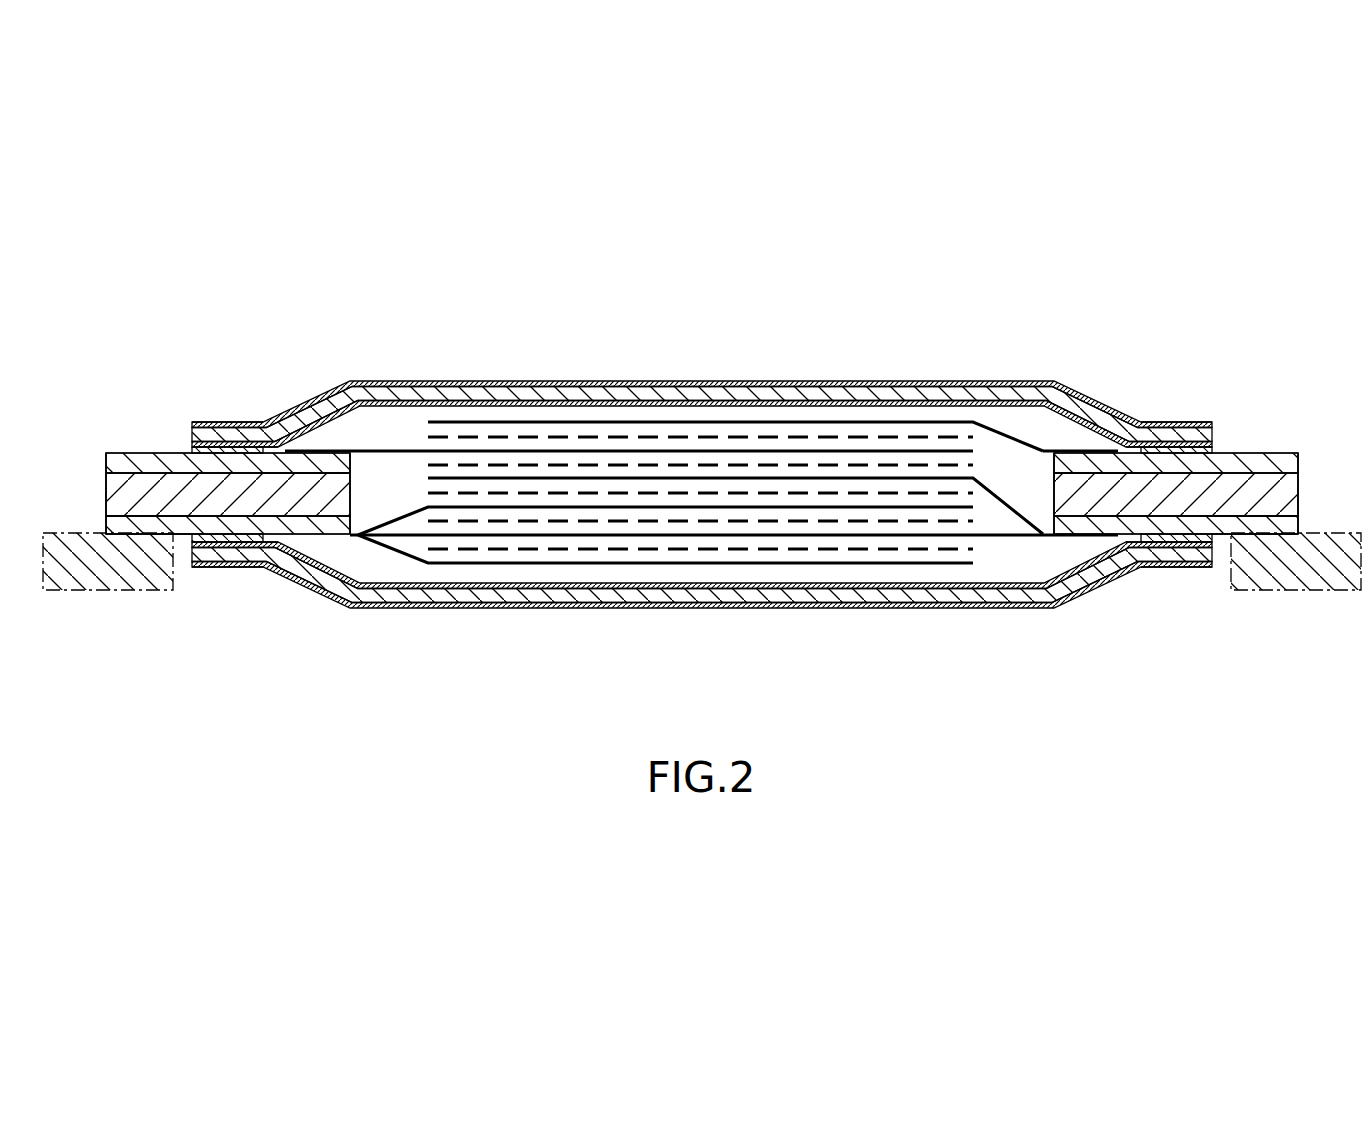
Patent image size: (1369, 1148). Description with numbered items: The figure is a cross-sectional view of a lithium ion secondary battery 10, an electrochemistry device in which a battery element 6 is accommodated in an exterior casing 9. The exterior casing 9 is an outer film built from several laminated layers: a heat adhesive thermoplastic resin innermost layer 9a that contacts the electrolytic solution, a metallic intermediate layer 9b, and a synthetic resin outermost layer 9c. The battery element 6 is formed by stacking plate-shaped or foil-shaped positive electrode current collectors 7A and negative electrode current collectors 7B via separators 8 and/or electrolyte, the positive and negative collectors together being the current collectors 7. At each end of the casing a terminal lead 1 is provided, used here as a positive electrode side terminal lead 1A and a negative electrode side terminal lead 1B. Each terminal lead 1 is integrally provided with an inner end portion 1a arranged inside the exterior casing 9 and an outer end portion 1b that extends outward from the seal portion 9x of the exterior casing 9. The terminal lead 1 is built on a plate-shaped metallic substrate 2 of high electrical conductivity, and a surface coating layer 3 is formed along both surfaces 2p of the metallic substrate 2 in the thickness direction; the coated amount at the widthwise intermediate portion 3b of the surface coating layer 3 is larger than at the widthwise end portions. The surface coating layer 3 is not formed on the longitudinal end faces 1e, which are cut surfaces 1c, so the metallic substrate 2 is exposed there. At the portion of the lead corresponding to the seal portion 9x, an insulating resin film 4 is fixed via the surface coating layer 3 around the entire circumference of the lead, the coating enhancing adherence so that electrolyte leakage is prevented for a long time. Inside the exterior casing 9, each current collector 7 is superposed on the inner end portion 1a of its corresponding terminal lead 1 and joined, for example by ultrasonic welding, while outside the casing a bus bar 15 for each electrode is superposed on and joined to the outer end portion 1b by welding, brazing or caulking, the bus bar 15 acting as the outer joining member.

The terminal lead 1 is at (130, 452).
The positive electrode side terminal lead 1A is at (1272, 452).
The negative electrode side terminal lead 1B is at (1176, 493).
The inner end portion 1a is at (303, 500).
The outer end portion 1b is at (140, 503).
The cut surface 1c is at (106, 497).
The end face 1e is at (693, 470).
The metallic substrate 2 is at (218, 493).
The surface of the metallic substrate 2p is at (182, 472).
The surface coating layer 3 is at (173, 538).
The widthwise intermediate portion of the surface coating layer 3b is at (150, 465).
The insulating resin film 4 is at (263, 452).
The battery element 6 is at (816, 425).
The current collector 7 is at (701, 484).
The positive electrode current collector 7A is at (577, 563).
The negative electrode current collector 7B is at (743, 535).
The separator 8 is at (690, 549).
The exterior casing 9 is at (500, 291).
The innermost layer 9a is at (377, 396).
The intermediate layer 9b is at (423, 390).
The outermost layer 9c is at (478, 381).
The seal portion 9x is at (237, 452).
The lithium ion secondary battery 10 is at (1004, 330).
The bus bar 15 is at (60, 573).